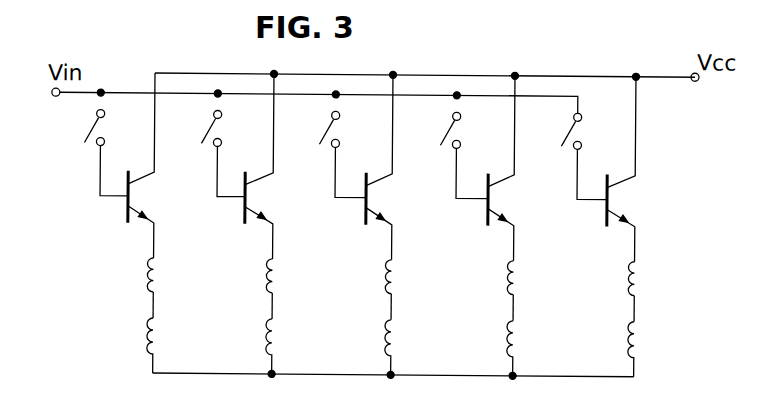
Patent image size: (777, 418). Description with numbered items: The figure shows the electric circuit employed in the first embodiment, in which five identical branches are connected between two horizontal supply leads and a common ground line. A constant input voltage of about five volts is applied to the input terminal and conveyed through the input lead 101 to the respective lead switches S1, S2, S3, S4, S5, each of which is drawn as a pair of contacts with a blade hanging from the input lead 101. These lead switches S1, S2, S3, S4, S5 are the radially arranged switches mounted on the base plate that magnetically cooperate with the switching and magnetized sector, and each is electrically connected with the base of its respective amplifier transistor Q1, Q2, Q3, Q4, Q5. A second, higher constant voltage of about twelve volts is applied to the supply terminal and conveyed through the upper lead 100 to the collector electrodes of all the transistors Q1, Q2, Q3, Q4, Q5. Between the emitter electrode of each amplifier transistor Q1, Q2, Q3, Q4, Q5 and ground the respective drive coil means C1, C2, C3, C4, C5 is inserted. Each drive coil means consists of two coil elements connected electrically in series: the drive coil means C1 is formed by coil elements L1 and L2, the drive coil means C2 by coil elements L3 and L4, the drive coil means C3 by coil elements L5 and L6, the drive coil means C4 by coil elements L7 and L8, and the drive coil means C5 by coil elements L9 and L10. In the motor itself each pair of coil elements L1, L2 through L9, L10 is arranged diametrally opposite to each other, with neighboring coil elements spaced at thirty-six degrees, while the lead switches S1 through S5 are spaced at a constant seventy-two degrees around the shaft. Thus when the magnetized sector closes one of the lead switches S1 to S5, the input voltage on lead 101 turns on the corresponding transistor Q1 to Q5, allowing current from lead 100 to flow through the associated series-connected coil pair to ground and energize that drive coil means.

The lead 100 is at (217, 73).
The input lead 101 is at (180, 93).
The lead switch S1 is at (97, 152).
The lead switch S2 is at (214, 153).
The lead switch S3 is at (334, 154).
The lead switch S4 is at (454, 155).
The lead switch S5 is at (574, 156).
The amplifier transistor Q1 is at (125, 165).
The amplifier transistor Q2 is at (243, 165).
The amplifier transistor Q3 is at (363, 166).
The amplifier transistor Q4 is at (485, 167).
The amplifier transistor Q5 is at (605, 168).
The coil element L1 is at (162, 276).
The coil element L2 is at (162, 335).
The coil element L3 is at (281, 276).
The coil element L4 is at (281, 335).
The coil element L5 is at (400, 276).
The coil element L6 is at (400, 335).
The coil element L7 is at (522, 276).
The coil element L8 is at (522, 335).
The coil element L9 is at (643, 276).
The coil element L10 is at (643, 335).
The drive coil means C1 is at (149, 301).
The drive coil means C2 is at (268, 299).
The drive coil means C3 is at (387, 299).
The drive coil means C4 is at (509, 301).
The drive coil means C5 is at (628, 293).